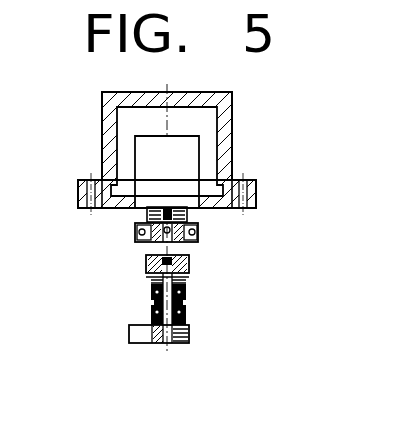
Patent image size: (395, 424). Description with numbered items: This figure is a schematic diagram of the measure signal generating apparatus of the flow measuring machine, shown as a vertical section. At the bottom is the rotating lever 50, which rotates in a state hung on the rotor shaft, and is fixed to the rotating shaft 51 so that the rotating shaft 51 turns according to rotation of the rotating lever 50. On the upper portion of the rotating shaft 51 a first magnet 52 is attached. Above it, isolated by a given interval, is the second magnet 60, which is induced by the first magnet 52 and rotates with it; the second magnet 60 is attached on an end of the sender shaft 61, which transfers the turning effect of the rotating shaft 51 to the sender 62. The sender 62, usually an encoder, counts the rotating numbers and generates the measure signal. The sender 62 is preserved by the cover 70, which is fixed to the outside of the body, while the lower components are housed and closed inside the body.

The cover 70 is at (232, 114).
The sender 62 is at (187, 168).
The sender shaft 61 is at (167, 202).
The second magnet 60 is at (201, 235).
The first magnet 52 is at (145, 261).
The rotating shaft 51 is at (158, 306).
The rotating lever 50 is at (189, 337).